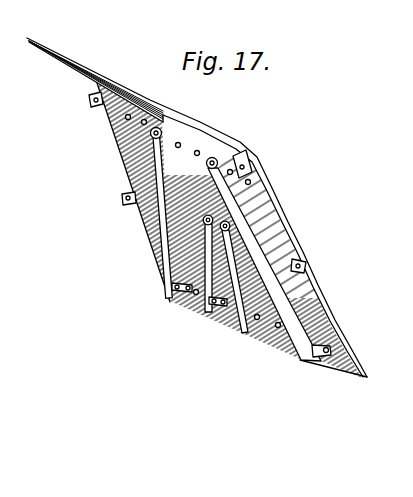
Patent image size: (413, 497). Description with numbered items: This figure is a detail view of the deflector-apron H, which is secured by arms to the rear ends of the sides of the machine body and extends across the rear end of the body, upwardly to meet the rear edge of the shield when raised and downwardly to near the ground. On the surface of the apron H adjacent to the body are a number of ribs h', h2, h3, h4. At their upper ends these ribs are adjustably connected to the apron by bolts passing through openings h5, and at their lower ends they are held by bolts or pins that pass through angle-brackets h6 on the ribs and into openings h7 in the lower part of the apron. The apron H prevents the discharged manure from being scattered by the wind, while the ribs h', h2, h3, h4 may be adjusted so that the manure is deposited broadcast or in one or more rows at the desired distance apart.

The deflector-apron H is at (292, 226).
The rib h' is at (201, 247).
The rib h2 is at (281, 214).
The rib h3 is at (206, 311).
The rib h4 is at (256, 320).
The openings h5 is at (200, 184).
The angle-brackets h6 is at (223, 306).
The openings h7 is at (326, 353).